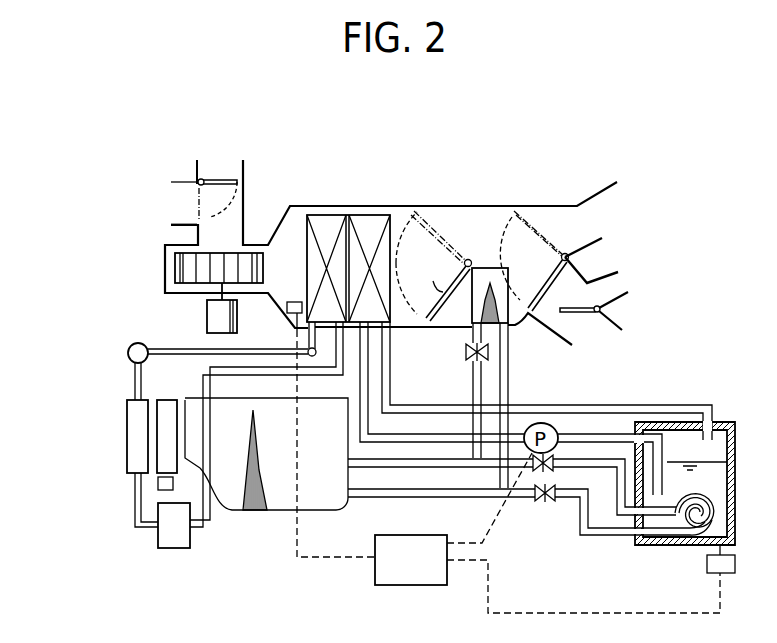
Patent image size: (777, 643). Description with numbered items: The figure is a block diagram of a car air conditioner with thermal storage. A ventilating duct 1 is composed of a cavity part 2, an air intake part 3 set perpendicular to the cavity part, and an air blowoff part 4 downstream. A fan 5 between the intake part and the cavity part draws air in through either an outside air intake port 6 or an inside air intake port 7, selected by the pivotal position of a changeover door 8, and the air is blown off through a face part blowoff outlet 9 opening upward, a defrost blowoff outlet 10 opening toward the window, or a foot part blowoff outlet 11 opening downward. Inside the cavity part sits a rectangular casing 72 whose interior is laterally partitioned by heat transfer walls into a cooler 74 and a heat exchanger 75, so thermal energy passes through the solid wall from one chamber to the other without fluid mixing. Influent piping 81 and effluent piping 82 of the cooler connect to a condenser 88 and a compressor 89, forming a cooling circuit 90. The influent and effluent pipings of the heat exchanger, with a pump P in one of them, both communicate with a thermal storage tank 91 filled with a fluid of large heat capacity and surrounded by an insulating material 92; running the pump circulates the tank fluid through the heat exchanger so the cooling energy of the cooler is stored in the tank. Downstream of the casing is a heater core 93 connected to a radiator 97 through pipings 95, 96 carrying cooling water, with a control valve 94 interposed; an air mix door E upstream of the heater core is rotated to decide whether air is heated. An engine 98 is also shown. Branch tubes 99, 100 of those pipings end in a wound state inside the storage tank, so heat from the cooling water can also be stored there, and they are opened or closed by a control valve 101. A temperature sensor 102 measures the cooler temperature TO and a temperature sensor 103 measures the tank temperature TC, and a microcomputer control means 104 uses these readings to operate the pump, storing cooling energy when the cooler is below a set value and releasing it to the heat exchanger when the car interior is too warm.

The ventilating duct 1 is at (416, 203).
The cavity part 2 is at (443, 204).
The air intake part 3 is at (245, 195).
The air blowoff part 4 is at (602, 188).
The fan 5 is at (175, 273).
The outside air intake port 6 is at (223, 155).
The inside air intake port 7 is at (177, 207).
The changeover door 8 is at (213, 177).
The face part blowoff outlet 9 is at (587, 220).
The defrost blowoff outlet 10 is at (610, 288).
The foot part blowoff outlet 11 is at (608, 340).
The casing 72 is at (343, 212).
The cooler 74 is at (320, 216).
The heat exchanger 75 is at (367, 216).
The influent piping 81 is at (170, 349).
The effluent piping 82 is at (318, 377).
The condenser 88 is at (133, 433).
The compressor 89 is at (172, 543).
The cooling circuit 90 is at (130, 383).
The thermal storage tank 91 is at (640, 547).
The insulating material 92 is at (682, 547).
The heater core 93 is at (484, 267).
The control valve 94 is at (466, 351).
The piping 95 is at (473, 383).
The piping 96 is at (509, 383).
The radiator 97 is at (285, 508).
The engine 98 is at (167, 445).
The branch tube 99 is at (560, 499).
The branch tube 100 is at (605, 474).
The control valve 101 is at (557, 453).
The temperature sensor 102 is at (285, 309).
The temperature sensor 103 is at (733, 576).
The control means 104 is at (408, 578).